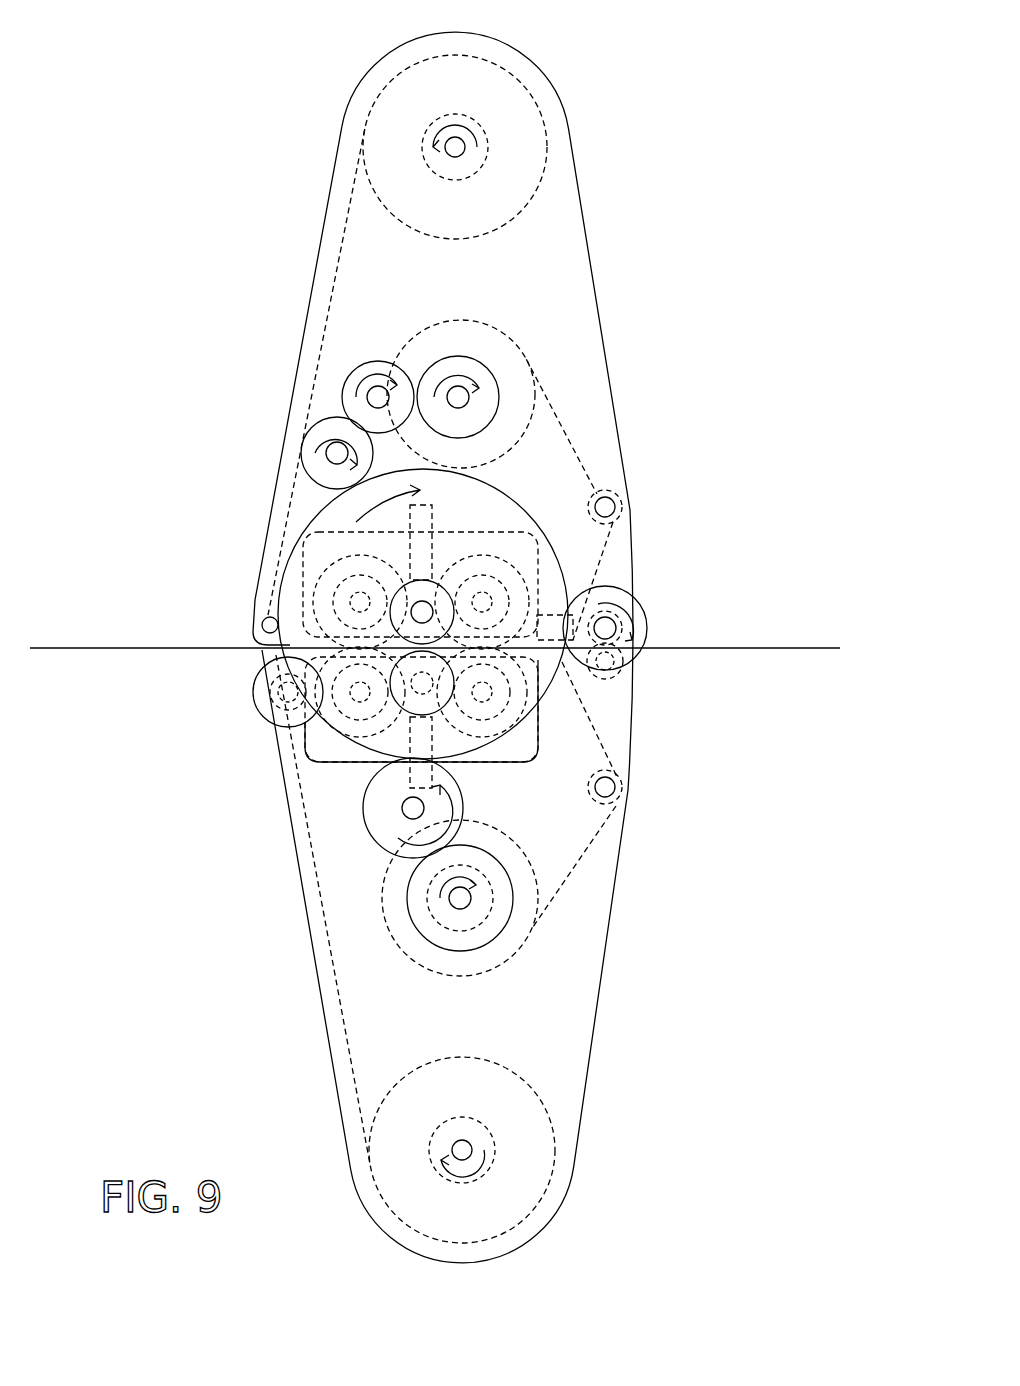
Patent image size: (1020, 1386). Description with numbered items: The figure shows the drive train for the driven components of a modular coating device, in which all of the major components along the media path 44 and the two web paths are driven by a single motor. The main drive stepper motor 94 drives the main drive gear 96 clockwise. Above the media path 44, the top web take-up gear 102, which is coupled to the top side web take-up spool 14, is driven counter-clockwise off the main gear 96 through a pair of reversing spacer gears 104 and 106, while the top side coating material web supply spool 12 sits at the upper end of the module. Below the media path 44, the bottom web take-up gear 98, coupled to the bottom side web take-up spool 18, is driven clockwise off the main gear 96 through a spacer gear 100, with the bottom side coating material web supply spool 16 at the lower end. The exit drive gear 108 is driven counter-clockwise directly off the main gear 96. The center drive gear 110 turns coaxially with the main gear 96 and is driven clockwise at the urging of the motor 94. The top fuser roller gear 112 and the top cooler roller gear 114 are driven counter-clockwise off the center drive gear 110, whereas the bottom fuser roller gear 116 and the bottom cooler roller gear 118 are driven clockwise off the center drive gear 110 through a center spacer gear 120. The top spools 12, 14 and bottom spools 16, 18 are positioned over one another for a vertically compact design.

The top side coating material web supply spool 12 is at (493, 228).
The top side web take-up spool 14 is at (456, 322).
The bottom side coating material web supply spool 16 is at (503, 1068).
The bottom side web take-up spool 18 is at (456, 975).
The media path 44 is at (156, 637).
The main drive stepper motor 94 is at (258, 696).
The main drive gear 96 is at (507, 500).
The bottom web take-up gear 98 is at (413, 905).
The spacer gear 100 is at (455, 800).
The top web take-up gear 102 is at (480, 368).
The reversing spacer gear 104 is at (306, 455).
The reversing spacer gear 106 is at (366, 372).
The exit drive gear 108 is at (628, 655).
The center drive gear 110 is at (405, 578).
The top fuser roller gear 112 is at (332, 596).
The top cooler roller gear 114 is at (475, 560).
The bottom fuser roller gear 116 is at (346, 735).
The bottom cooler roller gear 118 is at (532, 728).
The center spacer gear 120 is at (396, 772).